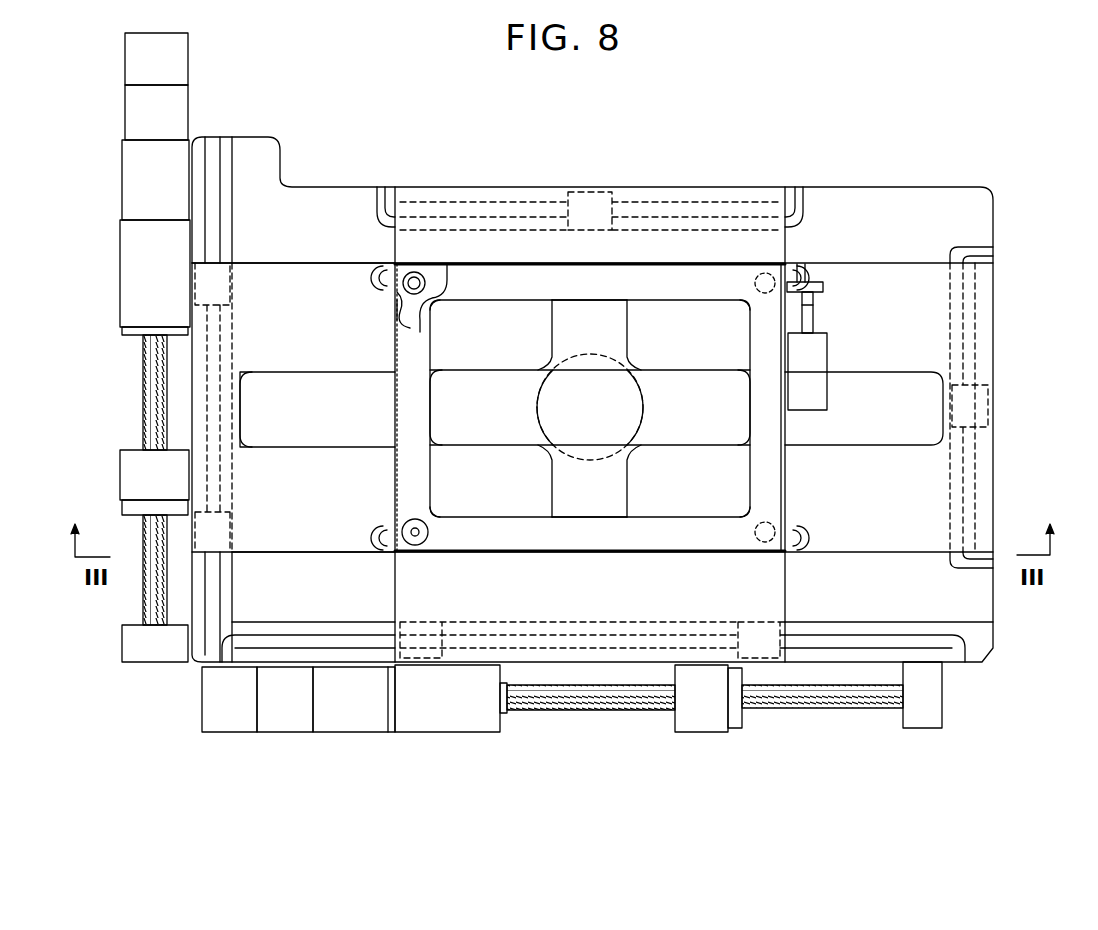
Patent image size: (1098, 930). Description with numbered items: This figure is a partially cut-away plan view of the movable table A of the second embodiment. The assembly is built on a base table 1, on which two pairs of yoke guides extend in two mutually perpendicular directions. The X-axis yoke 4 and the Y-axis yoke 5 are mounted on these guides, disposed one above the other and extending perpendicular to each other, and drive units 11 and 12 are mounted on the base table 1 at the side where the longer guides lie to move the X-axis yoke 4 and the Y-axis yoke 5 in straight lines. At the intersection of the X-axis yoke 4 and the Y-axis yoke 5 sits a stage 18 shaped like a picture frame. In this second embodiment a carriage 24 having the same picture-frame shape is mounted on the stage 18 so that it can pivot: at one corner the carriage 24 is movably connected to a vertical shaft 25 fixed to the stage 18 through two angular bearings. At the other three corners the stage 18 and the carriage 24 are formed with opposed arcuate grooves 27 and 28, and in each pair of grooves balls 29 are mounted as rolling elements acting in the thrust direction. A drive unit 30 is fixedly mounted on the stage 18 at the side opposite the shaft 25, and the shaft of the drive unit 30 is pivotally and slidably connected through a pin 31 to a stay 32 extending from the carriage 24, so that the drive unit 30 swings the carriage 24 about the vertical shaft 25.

The base table 1 is at (340, 595).
The X-axis yoke 4 is at (617, 595).
The Y-axis yoke 5 is at (293, 275).
The drive unit 11 is at (470, 735).
The drive unit 12 is at (120, 252).
The stage 18 is at (398, 307).
The carriage 24 is at (522, 275).
The vertical shaft 25 is at (405, 525).
The arcuate groove 27 is at (745, 292).
The arcuate groove 28 is at (435, 288).
The balls 29 is at (412, 276).
The drive unit 30 is at (818, 353).
The pin 31 is at (814, 306).
The stay 32 is at (806, 278).
The movable table A is at (917, 185).